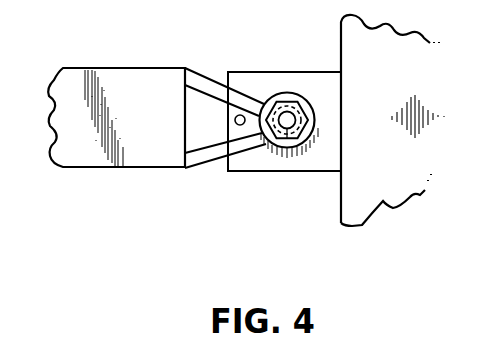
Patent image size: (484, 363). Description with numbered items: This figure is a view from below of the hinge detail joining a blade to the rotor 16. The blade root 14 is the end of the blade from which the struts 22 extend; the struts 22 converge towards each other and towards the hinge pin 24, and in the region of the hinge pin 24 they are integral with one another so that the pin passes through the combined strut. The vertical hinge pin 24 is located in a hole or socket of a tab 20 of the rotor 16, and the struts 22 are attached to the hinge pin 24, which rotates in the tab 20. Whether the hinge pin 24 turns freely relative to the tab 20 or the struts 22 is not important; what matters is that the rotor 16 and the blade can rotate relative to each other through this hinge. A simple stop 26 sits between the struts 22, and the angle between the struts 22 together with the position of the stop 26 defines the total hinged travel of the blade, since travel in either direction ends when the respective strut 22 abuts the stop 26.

The blade root 14 is at (126, 67).
The rotor 16 is at (384, 130).
The tab 20 is at (277, 78).
The struts 22 is at (205, 68).
The hinge pin 24 is at (287, 130).
The stop 26 is at (234, 122).